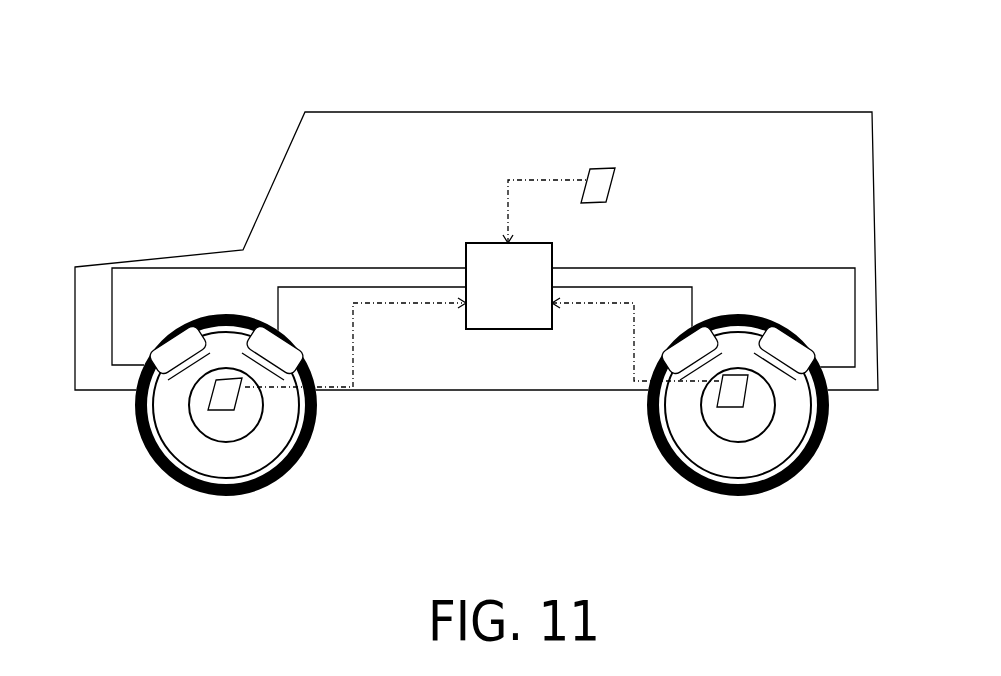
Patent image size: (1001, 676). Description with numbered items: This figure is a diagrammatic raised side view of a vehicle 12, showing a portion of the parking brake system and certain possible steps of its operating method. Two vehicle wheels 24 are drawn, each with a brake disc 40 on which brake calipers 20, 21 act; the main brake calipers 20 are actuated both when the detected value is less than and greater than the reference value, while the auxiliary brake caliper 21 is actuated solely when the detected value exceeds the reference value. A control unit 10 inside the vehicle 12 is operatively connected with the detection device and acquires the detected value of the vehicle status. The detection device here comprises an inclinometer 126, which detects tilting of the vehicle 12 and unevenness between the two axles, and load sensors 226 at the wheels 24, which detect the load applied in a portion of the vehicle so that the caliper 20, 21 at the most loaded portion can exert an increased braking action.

The control unit 10 is at (509, 286).
The vehicle 12 is at (455, 111).
The main brake caliper 20 is at (479, 398).
The auxiliary brake caliper 21 is at (143, 362).
The vehicle wheel 24 is at (287, 472).
The brake disc 40 is at (222, 463).
The inclinometer 126 is at (596, 170).
The load sensor 226 is at (213, 393).